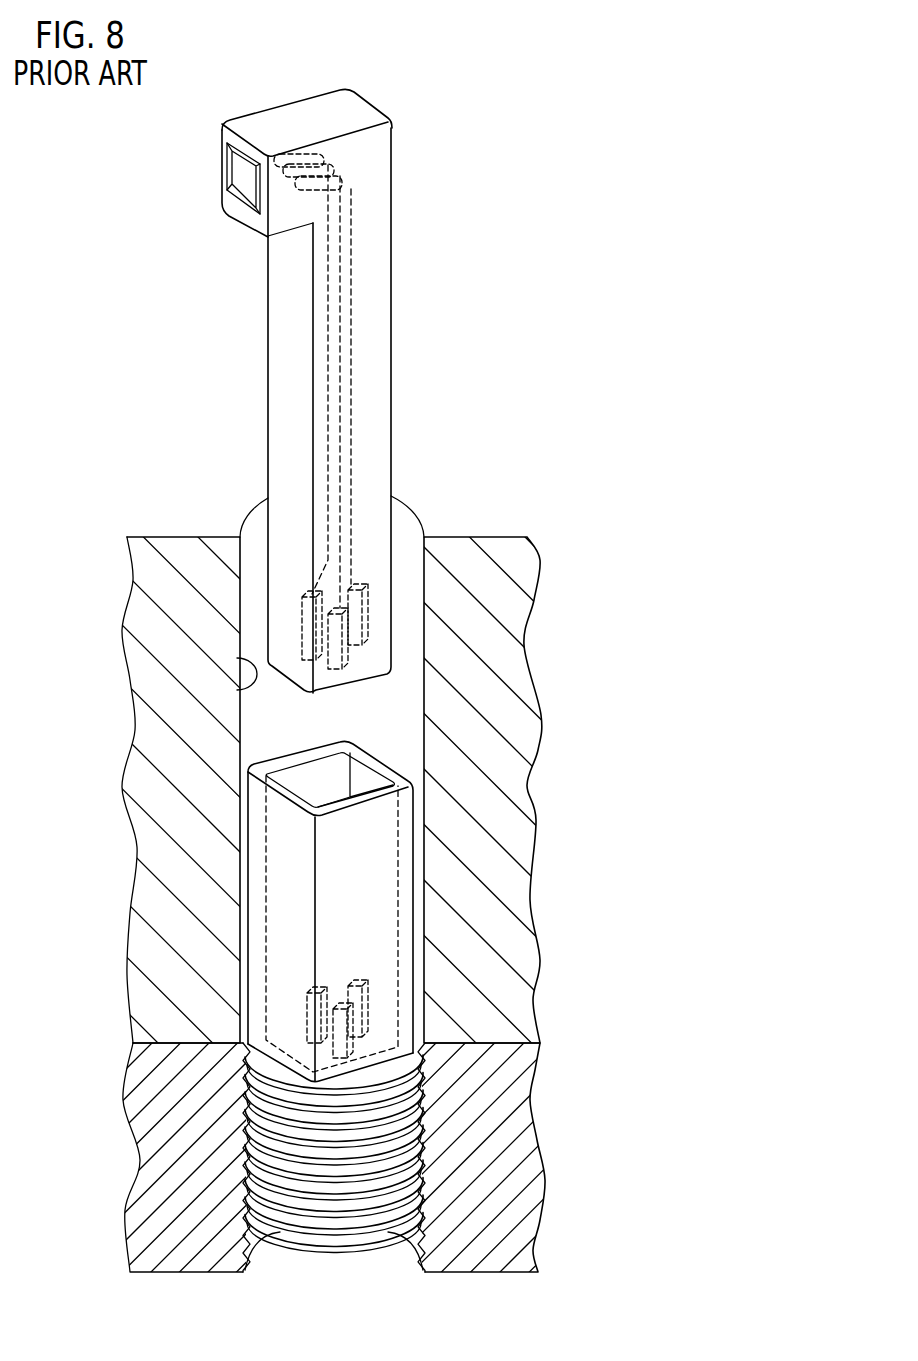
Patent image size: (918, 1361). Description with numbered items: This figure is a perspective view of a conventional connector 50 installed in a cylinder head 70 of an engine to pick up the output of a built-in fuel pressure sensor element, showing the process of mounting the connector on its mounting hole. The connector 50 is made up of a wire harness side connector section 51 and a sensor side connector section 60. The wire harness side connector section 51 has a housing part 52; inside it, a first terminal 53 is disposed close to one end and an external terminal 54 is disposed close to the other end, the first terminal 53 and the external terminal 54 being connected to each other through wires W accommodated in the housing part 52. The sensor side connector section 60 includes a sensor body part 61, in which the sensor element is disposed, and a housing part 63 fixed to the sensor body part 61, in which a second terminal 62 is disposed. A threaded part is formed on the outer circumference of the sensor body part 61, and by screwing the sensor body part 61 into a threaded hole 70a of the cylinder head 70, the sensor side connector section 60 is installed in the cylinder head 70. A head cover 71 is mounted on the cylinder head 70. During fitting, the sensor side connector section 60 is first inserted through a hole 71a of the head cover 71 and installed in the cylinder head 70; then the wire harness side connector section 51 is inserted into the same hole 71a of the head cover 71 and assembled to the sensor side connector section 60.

The connector 50 is at (595, 415).
The wire harness side connector section 51 is at (416, 446).
The housing part 52 is at (380, 163).
The first terminal 53 is at (310, 624).
The external terminal 54 is at (296, 153).
The wires W is at (328, 275).
The sensor side connector section 60 is at (428, 821).
The sensor body part 61 is at (417, 1153).
The second terminal 62 is at (366, 988).
The housing part 63 is at (291, 919).
The cylinder head 70 is at (153, 1118).
The threaded hole 70a is at (263, 1200).
The head cover 71 is at (152, 733).
The hole 71a is at (238, 690).